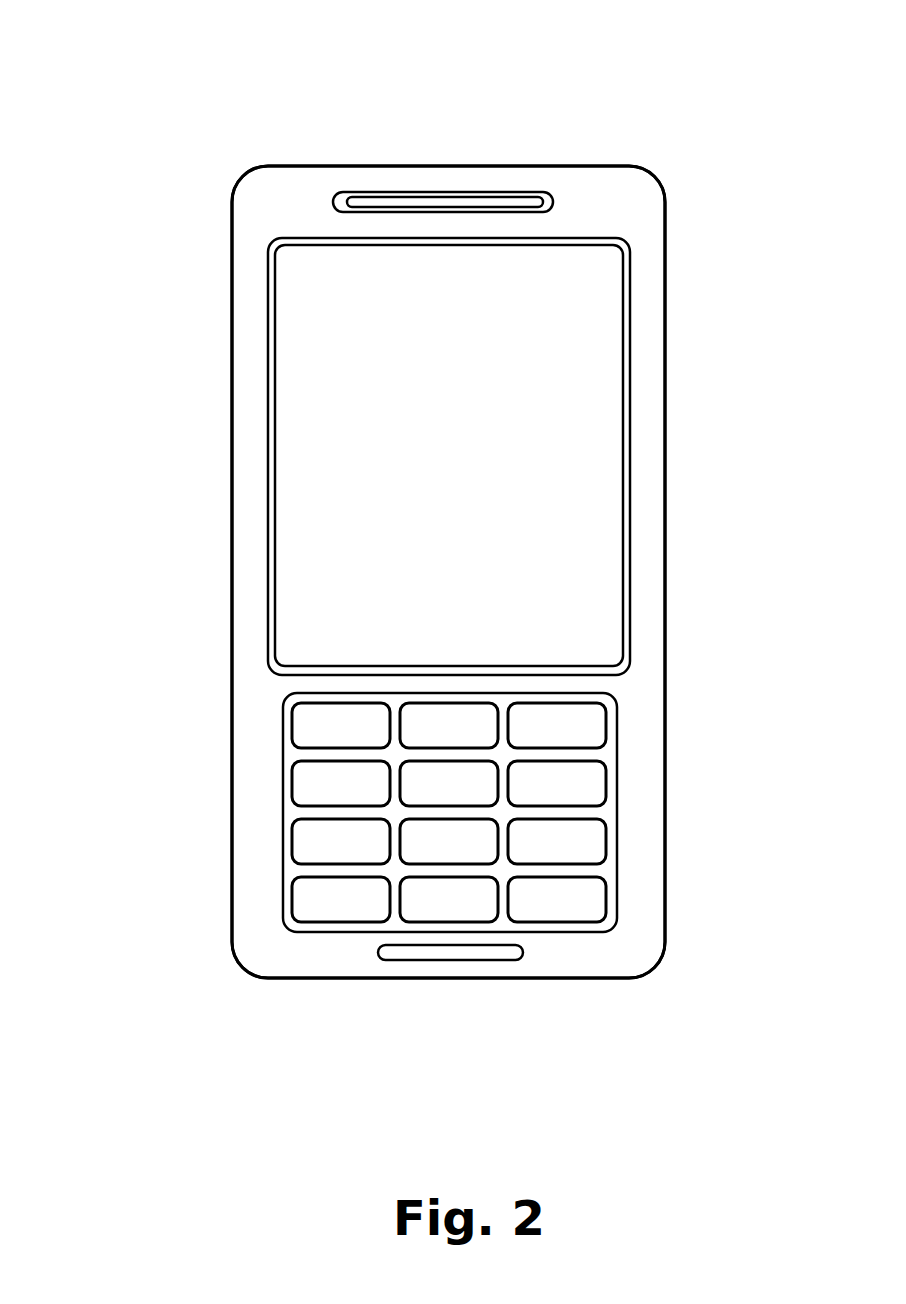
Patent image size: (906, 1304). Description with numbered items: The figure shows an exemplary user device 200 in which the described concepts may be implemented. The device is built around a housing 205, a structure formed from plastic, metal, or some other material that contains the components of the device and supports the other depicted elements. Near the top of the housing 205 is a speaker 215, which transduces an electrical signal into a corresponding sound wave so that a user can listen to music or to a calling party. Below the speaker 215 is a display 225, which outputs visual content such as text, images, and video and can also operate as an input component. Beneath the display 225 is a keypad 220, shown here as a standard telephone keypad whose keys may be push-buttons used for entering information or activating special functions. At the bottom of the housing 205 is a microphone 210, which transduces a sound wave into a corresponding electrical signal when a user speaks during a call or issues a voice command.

The user device 200 is at (243, 56).
The housing 205 is at (232, 448).
The microphone 210 is at (440, 960).
The speaker 215 is at (409, 194).
The keypad 220 is at (676, 692).
The display 225 is at (572, 240).